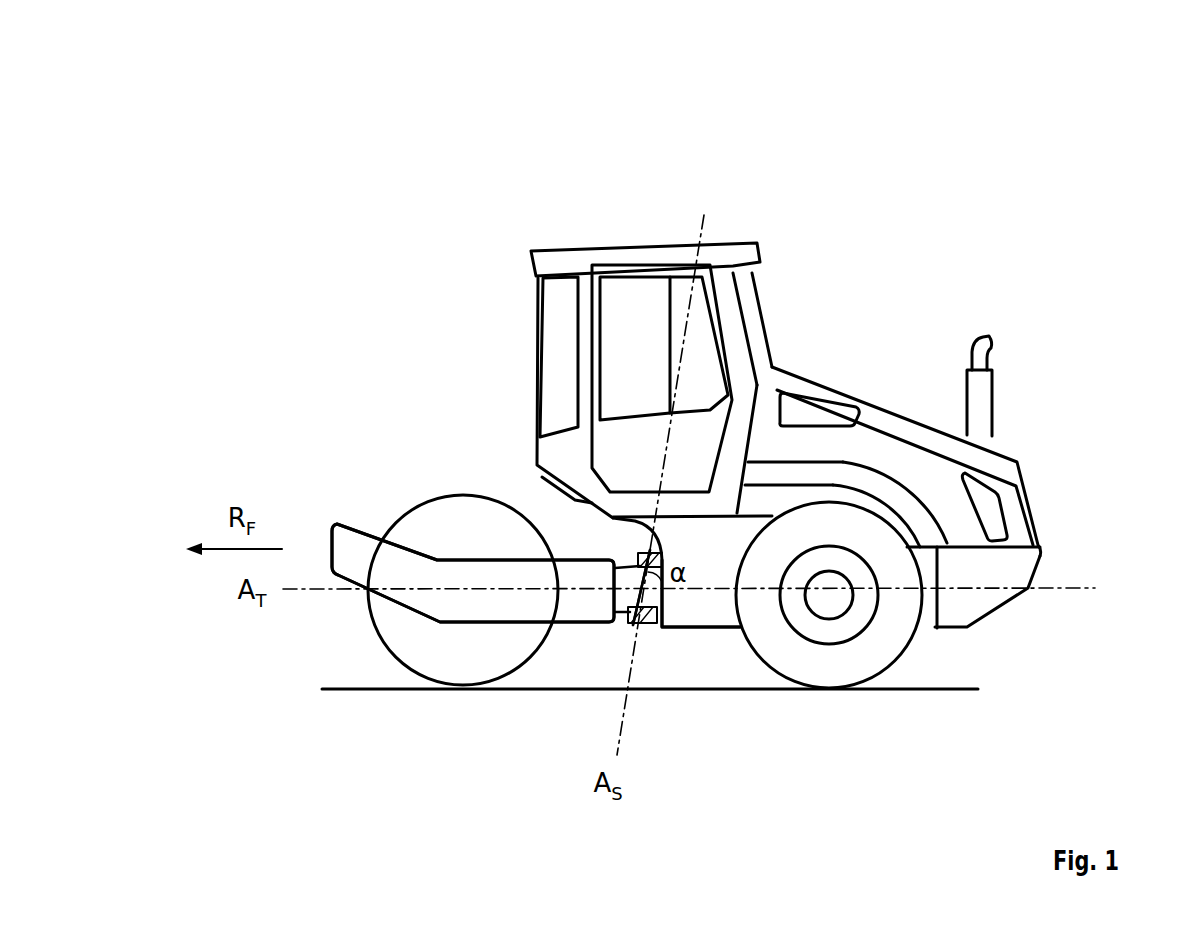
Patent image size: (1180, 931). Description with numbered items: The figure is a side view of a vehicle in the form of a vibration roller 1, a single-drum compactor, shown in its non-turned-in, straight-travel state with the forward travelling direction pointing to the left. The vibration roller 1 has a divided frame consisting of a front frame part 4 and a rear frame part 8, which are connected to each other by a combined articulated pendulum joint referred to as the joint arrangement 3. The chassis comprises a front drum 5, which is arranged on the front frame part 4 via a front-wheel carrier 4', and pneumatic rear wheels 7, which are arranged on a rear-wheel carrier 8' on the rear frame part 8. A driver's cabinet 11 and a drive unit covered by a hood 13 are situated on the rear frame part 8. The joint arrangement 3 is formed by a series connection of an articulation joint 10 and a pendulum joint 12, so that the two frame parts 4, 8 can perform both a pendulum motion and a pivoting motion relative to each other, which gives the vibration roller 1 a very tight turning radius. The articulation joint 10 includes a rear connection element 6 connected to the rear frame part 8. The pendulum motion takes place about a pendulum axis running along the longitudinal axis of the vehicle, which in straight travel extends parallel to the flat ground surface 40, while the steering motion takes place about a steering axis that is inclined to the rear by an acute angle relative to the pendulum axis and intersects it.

The vibration roller 1 is at (877, 208).
The joint arrangement 3 is at (616, 607).
The front frame part 4 is at (426, 526).
The front-wheel carrier 4' is at (473, 529).
The front drum 5 is at (423, 643).
The rear connection element 6 is at (650, 622).
The pneumatic rear wheels 7 is at (895, 643).
The rear frame part 8 is at (946, 494).
The rear-wheel carrier 8' is at (695, 591).
The articulation joint 10 is at (648, 558).
The driver's cabinet 11 is at (730, 322).
The pendulum joint 12 is at (632, 566).
The hood 13 is at (883, 405).
The flat ground surface 40 is at (322, 690).